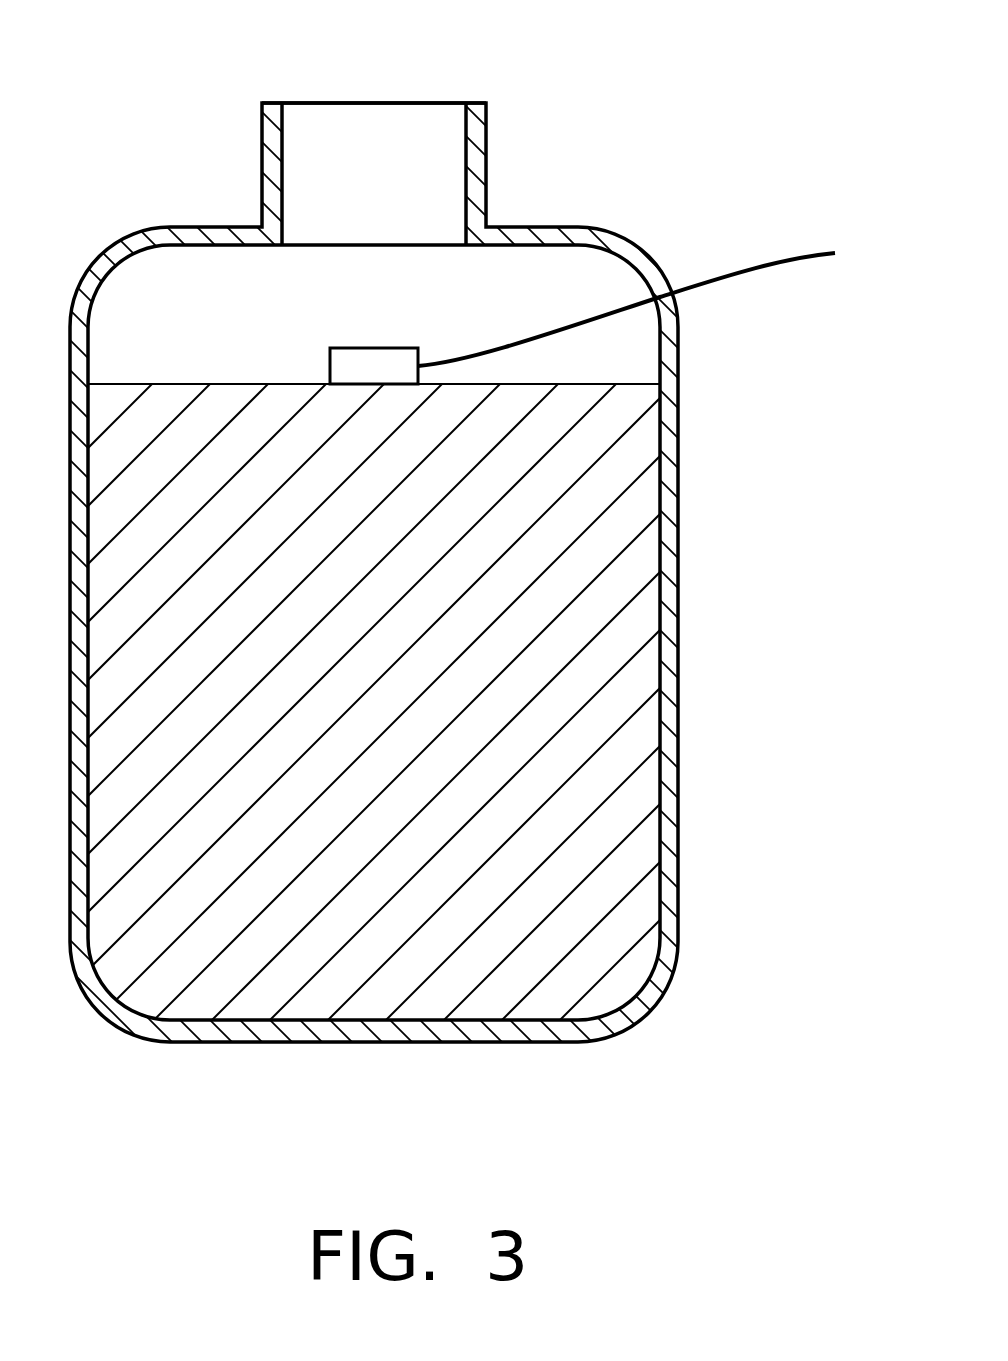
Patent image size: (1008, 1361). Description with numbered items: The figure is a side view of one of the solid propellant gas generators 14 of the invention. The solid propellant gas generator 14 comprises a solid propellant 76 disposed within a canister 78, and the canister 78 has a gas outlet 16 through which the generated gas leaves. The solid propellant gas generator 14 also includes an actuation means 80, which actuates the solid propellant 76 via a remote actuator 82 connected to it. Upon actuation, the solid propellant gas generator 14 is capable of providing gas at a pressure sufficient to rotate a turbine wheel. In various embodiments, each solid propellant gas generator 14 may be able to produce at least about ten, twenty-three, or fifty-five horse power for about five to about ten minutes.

The solid propellant gas generator 14 is at (504, 550).
The gas outlet 16 is at (403, 103).
The solid propellant 76 is at (253, 418).
The canister 78 is at (678, 440).
The actuation means 80 is at (375, 348).
The remote actuator 82 is at (772, 258).